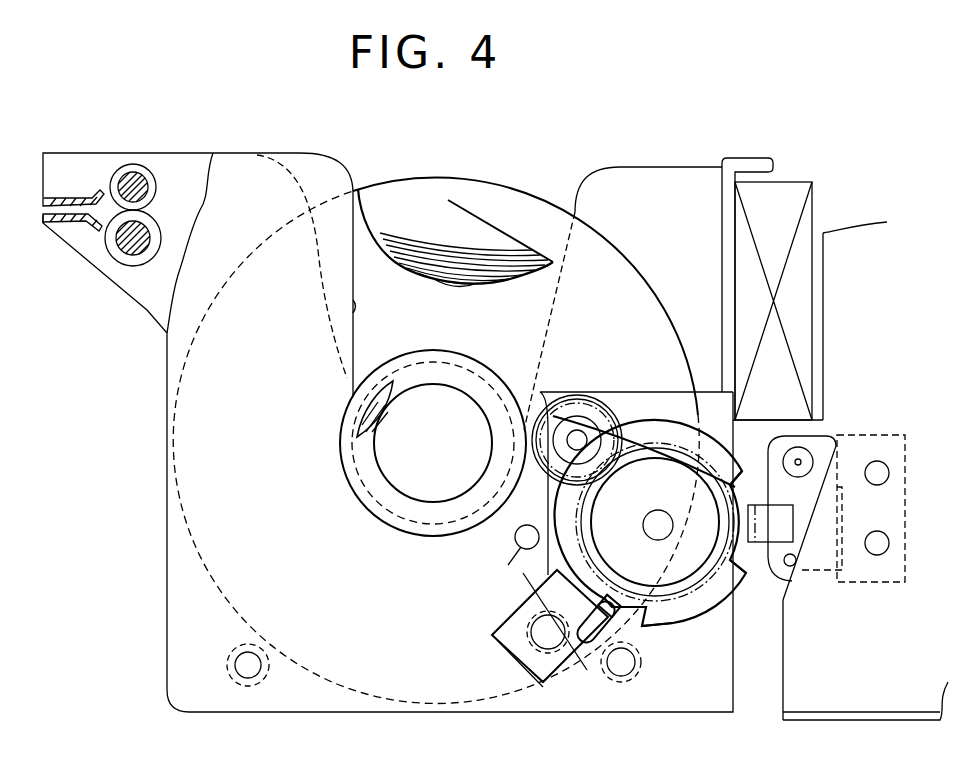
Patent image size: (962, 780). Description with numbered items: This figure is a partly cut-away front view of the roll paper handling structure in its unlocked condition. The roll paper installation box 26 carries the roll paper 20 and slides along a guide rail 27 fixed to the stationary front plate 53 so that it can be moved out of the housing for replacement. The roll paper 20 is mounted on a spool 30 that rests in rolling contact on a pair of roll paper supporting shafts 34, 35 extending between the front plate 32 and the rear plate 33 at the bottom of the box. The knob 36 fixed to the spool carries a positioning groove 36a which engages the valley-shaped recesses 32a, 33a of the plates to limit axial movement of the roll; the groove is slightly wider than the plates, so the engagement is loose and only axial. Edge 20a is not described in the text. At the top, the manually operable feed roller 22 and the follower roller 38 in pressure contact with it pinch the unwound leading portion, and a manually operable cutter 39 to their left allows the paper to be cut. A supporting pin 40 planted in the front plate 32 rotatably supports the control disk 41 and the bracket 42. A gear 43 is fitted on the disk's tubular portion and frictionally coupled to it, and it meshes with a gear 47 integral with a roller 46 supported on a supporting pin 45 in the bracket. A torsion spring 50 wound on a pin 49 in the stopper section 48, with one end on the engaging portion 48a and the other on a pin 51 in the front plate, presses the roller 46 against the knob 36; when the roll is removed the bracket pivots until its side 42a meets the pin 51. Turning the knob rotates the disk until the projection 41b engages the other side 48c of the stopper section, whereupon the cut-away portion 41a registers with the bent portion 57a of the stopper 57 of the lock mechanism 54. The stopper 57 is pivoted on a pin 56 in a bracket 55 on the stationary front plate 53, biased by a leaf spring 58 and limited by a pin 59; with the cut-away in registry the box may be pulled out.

The roll paper 20 is at (432, 233).
The slot guide edge 20a is at (473, 210).
The feed roller 22 is at (134, 176).
The roll paper installation box 26 is at (551, 181).
The guide rail 27 is at (827, 185).
The spool 30 is at (613, 247).
The front plate 32 is at (165, 578).
The recess 32a is at (353, 312).
The rear plate 33 is at (198, 176).
The recess 33a is at (318, 292).
The roll paper supporting shaft 34 is at (626, 665).
The roll paper supporting shaft 35 is at (236, 665).
The knob 36 is at (445, 373).
The positioning groove 36a is at (380, 378).
The follower roller 38 is at (122, 250).
The cutter 39 is at (64, 197).
The supporting pin 40 is at (645, 522).
The control disk 41 is at (648, 432).
The cut-away portion 41a is at (742, 484).
The projection 41b is at (640, 638).
The bracket 42 is at (690, 612).
The side of bracket 42a is at (540, 555).
The gear 43 is at (688, 455).
The supporting pin 45 is at (582, 437).
The roller 46 is at (546, 405).
The gear 47 is at (590, 405).
The stopper section 48 is at (583, 655).
The engaging portion 48a is at (604, 660).
The other side of stopper 48c is at (622, 585).
The pin 49 is at (540, 632).
The torsion spring 50 is at (527, 571).
The pin 51 is at (528, 524).
The stationary front plate 53 is at (822, 308).
The lock mechanism 54 is at (778, 593).
The bracket 55 is at (906, 472).
The pin 56 is at (805, 458).
The stopper 57 is at (787, 440).
The bent portion 57a is at (702, 584).
The leaf spring 58 is at (848, 540).
The pin 59 is at (792, 570).